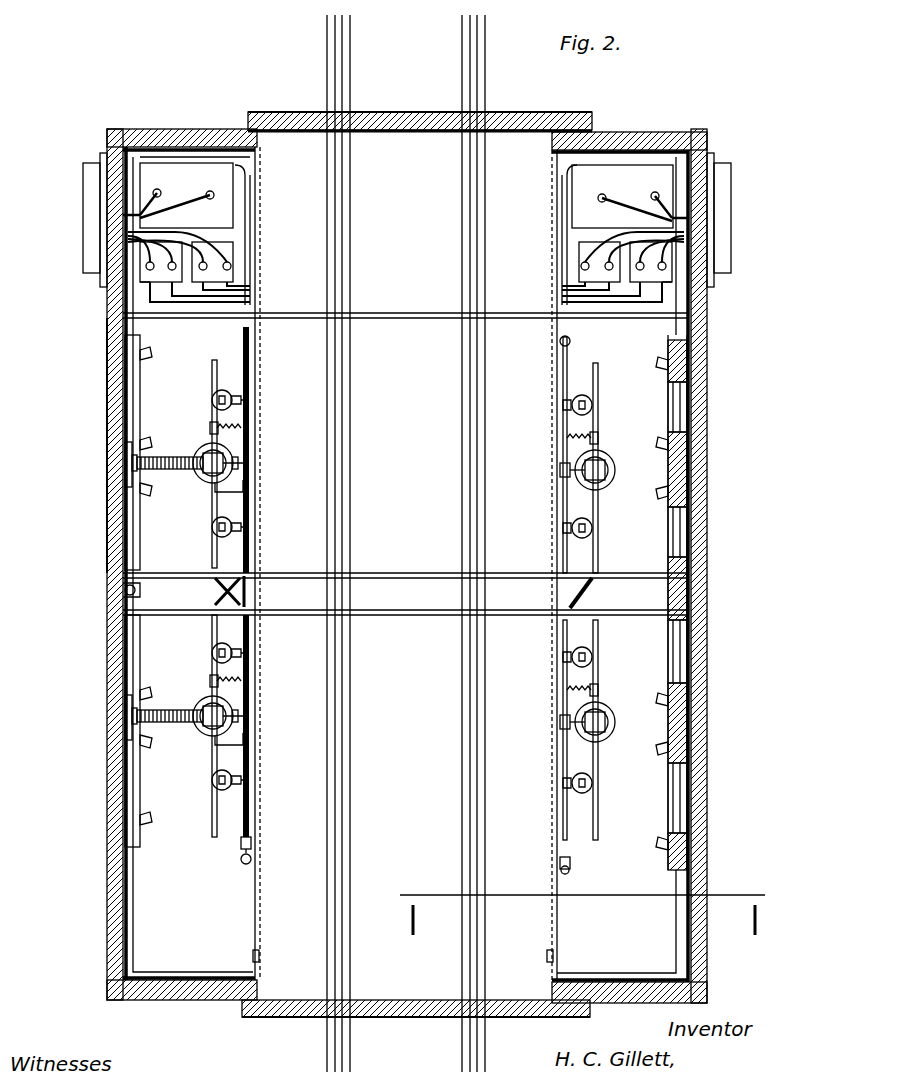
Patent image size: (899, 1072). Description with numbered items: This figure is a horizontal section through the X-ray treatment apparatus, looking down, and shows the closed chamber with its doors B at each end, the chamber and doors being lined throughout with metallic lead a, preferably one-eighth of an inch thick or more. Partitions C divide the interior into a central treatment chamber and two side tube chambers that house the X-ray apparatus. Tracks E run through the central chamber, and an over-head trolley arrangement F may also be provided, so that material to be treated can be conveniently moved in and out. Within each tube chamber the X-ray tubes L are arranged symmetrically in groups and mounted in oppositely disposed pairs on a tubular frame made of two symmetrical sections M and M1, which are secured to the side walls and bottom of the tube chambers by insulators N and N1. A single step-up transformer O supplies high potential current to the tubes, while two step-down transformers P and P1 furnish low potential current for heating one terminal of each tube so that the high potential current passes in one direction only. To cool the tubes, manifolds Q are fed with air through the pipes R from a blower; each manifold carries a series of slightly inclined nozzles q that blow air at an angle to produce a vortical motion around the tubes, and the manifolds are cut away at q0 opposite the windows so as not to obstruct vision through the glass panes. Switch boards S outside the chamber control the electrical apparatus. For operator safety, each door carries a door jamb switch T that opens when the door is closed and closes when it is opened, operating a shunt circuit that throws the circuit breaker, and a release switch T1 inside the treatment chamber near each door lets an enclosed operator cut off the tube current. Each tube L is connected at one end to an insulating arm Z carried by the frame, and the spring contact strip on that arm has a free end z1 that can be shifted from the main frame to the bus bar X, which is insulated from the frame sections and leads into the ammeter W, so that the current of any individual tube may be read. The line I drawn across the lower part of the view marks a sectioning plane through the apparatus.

The metallic lead lining a is at (178, 146).
The door B is at (398, 112).
The tracks E is at (327, 72).
The door jamb switch T is at (578, 112).
The release switch T1 is at (259, 955).
The step-up transformer O is at (233, 190).
The switch board S is at (83, 218).
The step-down transformer P is at (148, 274).
The step-down transformer P1 is at (235, 248).
The partition C is at (258, 292).
The over-head trolley arrangement F is at (107, 340).
The manifold Q is at (130, 396).
The nozzle q is at (150, 355).
The cut-away portion of manifold q0 is at (688, 420).
The frame section M is at (217, 380).
The frame section M1 is at (250, 500).
The insulator N is at (200, 458).
The insulator N1 is at (243, 428).
The X-ray tube L is at (215, 394).
The insulating arm Z is at (213, 405).
The free end of contact strip z1 is at (242, 402).
The bus bar X is at (250, 550).
The ammeter W is at (253, 848).
The air pipe R is at (124, 590).
The section line I is at (573, 908).